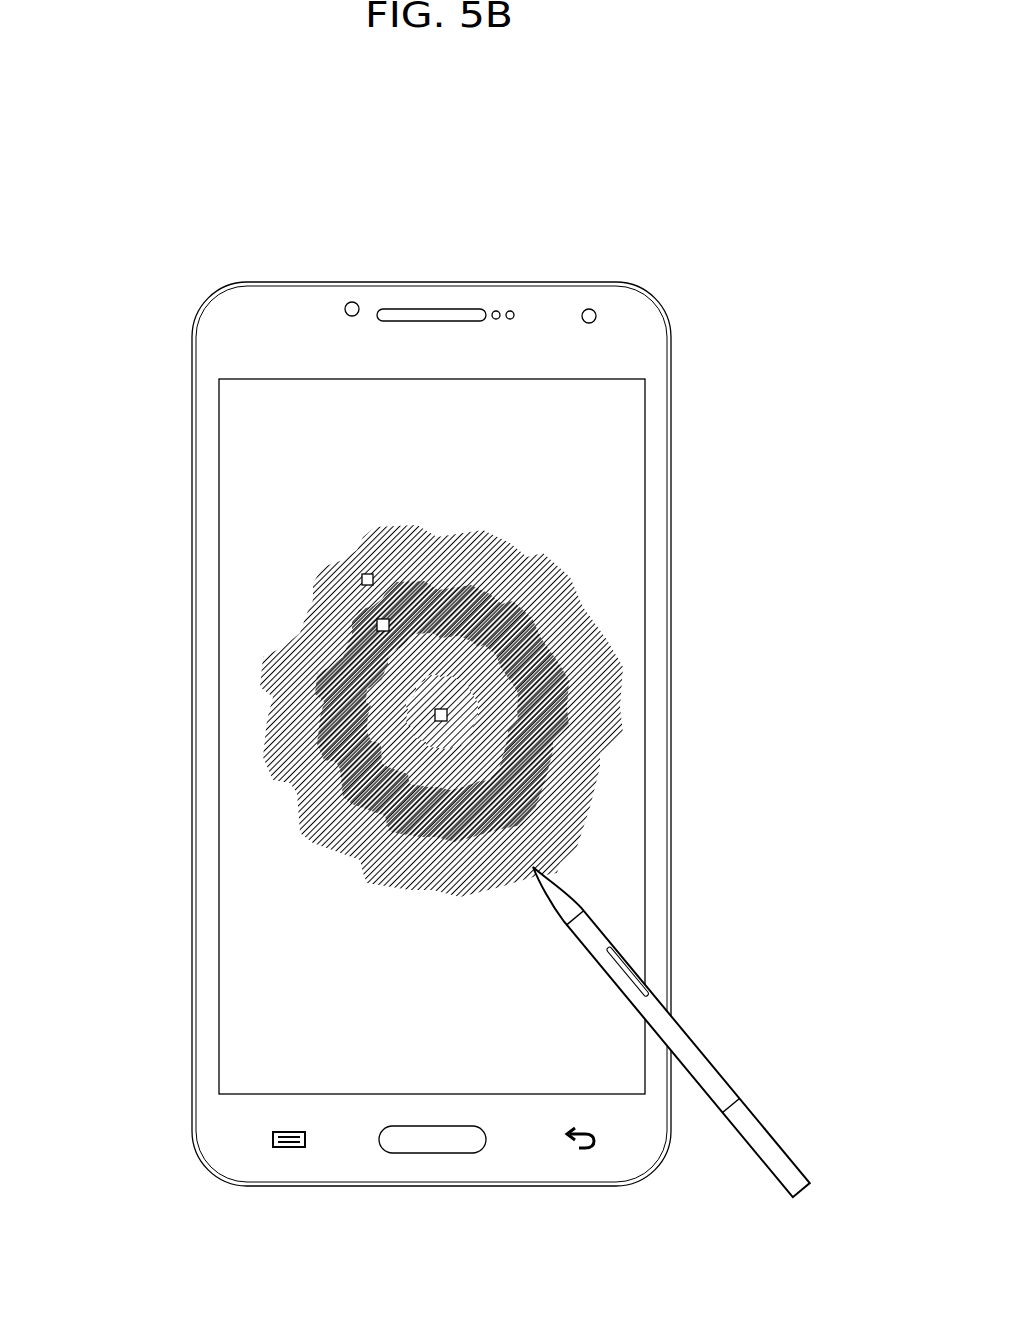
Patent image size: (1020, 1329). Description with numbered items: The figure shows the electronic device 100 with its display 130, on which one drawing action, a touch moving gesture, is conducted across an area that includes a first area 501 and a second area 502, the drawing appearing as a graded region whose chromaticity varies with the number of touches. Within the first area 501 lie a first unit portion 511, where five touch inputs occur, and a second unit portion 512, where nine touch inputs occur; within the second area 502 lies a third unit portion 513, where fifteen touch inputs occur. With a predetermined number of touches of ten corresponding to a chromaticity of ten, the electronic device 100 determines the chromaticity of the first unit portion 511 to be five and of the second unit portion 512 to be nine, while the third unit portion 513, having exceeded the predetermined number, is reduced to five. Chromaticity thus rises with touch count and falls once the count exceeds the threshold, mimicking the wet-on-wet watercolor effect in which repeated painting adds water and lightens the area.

The electronic device 100 is at (654, 300).
The display 130 is at (521, 379).
The first area 501 is at (373, 532).
The second area 502 is at (525, 742).
The first unit portion 511 is at (362, 578).
The second unit portion 512 is at (377, 623).
The third unit portion 513 is at (447, 714).